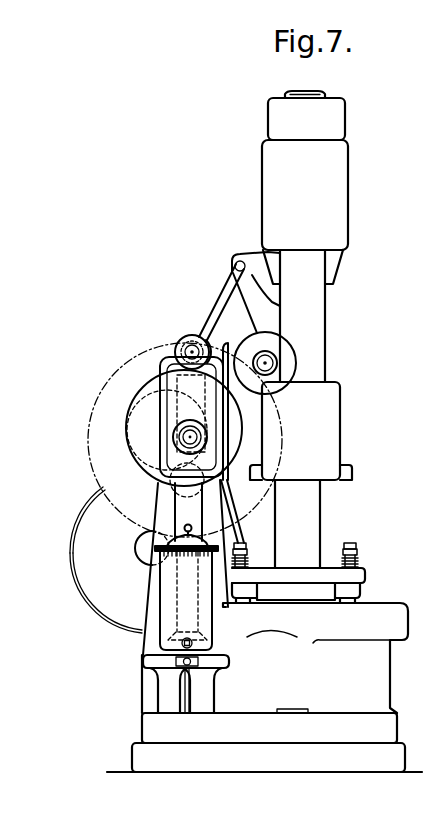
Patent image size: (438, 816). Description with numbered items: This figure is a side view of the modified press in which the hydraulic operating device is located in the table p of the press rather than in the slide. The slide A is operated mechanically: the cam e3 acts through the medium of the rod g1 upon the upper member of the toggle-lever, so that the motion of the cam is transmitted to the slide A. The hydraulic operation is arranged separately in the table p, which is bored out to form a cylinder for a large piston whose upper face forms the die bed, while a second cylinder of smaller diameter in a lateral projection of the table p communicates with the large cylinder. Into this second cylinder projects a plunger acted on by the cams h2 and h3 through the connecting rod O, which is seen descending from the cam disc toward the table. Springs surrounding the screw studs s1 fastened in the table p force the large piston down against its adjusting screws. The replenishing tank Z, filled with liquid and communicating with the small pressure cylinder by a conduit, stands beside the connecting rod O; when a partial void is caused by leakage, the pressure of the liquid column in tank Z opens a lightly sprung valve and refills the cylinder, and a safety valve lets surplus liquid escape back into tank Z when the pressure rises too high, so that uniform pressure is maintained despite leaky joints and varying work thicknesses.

The slide A is at (298, 347).
The table p is at (229, 661).
The replenishing tank Z is at (186, 592).
The connecting rod O is at (188, 512).
The cam h2 is at (158, 388).
The cam h3 is at (129, 457).
The rod g1 is at (229, 305).
The cam e3 is at (233, 462).
The screw studs s1 is at (350, 543).